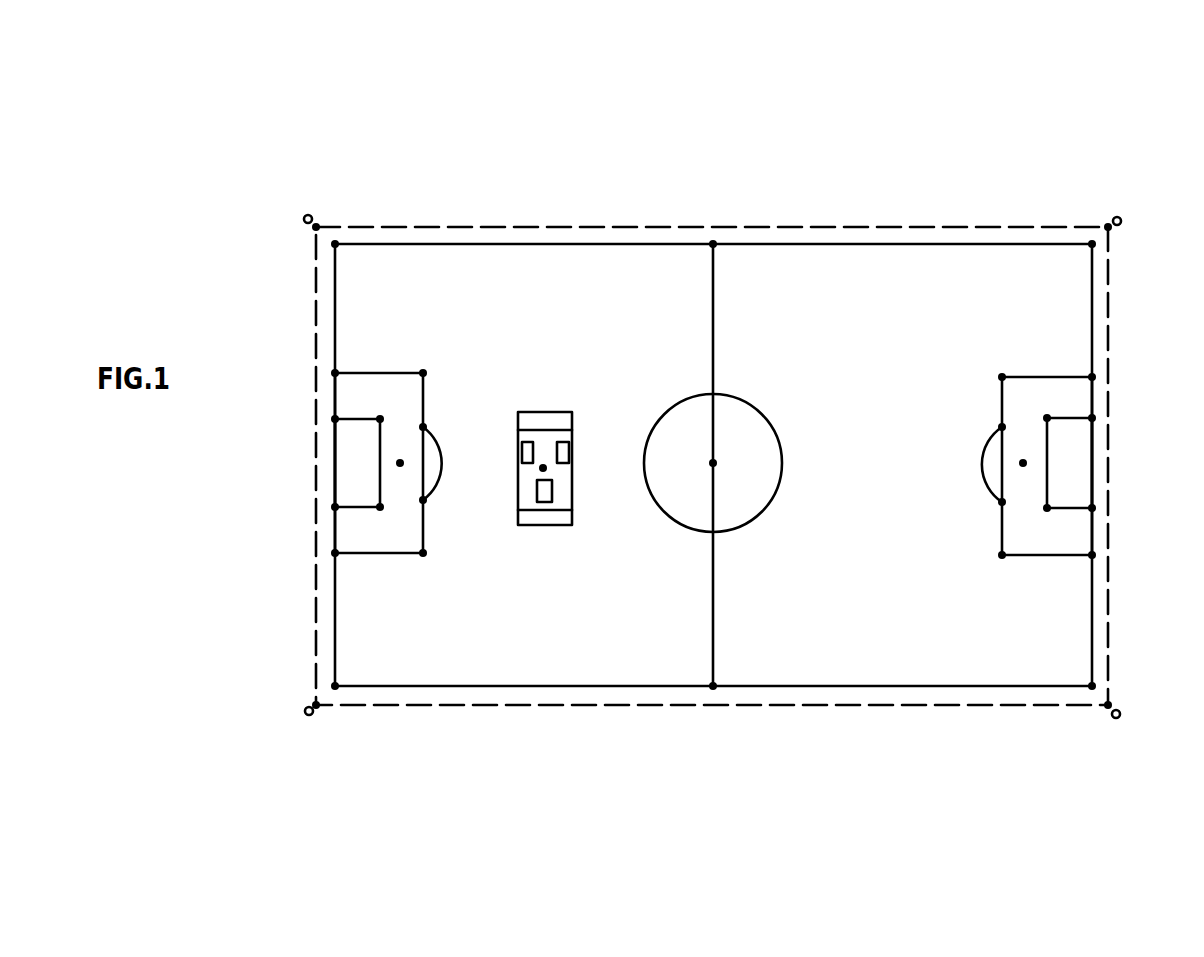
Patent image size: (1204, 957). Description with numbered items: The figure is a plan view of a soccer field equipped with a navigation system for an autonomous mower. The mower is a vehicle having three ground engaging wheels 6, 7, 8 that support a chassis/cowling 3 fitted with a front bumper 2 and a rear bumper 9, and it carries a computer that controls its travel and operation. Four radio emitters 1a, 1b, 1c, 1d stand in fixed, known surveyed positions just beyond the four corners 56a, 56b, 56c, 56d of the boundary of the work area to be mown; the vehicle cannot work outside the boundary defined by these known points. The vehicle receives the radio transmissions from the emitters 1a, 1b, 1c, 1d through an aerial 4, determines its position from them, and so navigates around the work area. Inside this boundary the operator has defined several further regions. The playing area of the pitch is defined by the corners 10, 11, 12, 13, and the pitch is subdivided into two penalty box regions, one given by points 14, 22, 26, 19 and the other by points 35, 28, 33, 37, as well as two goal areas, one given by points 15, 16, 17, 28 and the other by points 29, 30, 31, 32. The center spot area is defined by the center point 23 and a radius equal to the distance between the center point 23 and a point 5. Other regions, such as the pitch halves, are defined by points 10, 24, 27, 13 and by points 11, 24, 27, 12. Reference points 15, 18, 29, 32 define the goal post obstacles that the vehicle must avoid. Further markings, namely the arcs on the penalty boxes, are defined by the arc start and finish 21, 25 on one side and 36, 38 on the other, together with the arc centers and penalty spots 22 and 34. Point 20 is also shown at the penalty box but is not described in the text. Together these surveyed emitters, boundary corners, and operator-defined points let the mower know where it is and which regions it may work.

The radio emitter 1a is at (308, 215).
The radio emitter 1b is at (1117, 217).
The radio emitter 1c is at (1120, 714).
The radio emitter 1d is at (305, 711).
The corner of the boundary 56a is at (316, 227).
The corner of the boundary 56b is at (1108, 227).
The corner of the boundary 56c is at (1108, 705).
The corner of the boundary 56d is at (316, 705).
The front bumper 2 is at (543, 468).
The chassis/cowling 3 is at (555, 445).
The aerial 4 is at (540, 425).
The point 5 is at (713, 395).
The ground engaging wheel 6 is at (522, 463).
The ground engaging wheel 7 is at (569, 463).
The ground engaging wheel 8 is at (543, 502).
The rear bumper 9 is at (553, 510).
The corner 10 is at (335, 244).
The corner 11 is at (1092, 244).
The corner 12 is at (1092, 686).
The corner 13 is at (335, 686).
The penalty box region point 14 is at (335, 373).
The goal area point 15 is at (335, 419).
The goal area point 16 is at (380, 419).
The goal area point 17 is at (380, 507).
The reference point 18 is at (335, 507).
The penalty box region point 19 is at (335, 553).
The penalty area corner 20 is at (423, 373).
The arc start 21 is at (423, 427).
The penalty spot 22 is at (400, 463).
The center point 23 is at (713, 463).
The point 24 is at (713, 244).
The arc finish 25 is at (423, 500).
The penalty box region point 26 is at (423, 553).
The point 27 is at (713, 686).
The penalty box region point 28 is at (1092, 377).
The goal area point 29 is at (1092, 418).
The goal area point 30 is at (1047, 418).
The goal area point 31 is at (1047, 508).
The goal area point 32 is at (1092, 508).
The penalty box region point 33 is at (1092, 555).
The penalty spot 34 is at (1023, 463).
The penalty box region point 35 is at (1002, 377).
The arc start 36 is at (1002, 427).
The penalty box region point 37 is at (1002, 555).
The arc finish 38 is at (1002, 502).